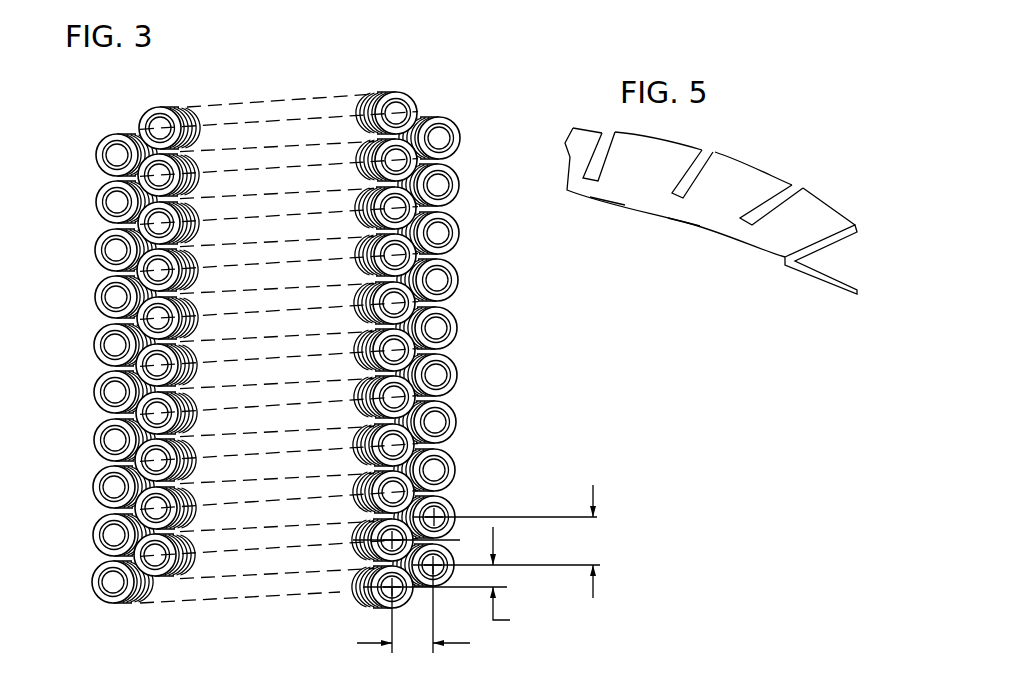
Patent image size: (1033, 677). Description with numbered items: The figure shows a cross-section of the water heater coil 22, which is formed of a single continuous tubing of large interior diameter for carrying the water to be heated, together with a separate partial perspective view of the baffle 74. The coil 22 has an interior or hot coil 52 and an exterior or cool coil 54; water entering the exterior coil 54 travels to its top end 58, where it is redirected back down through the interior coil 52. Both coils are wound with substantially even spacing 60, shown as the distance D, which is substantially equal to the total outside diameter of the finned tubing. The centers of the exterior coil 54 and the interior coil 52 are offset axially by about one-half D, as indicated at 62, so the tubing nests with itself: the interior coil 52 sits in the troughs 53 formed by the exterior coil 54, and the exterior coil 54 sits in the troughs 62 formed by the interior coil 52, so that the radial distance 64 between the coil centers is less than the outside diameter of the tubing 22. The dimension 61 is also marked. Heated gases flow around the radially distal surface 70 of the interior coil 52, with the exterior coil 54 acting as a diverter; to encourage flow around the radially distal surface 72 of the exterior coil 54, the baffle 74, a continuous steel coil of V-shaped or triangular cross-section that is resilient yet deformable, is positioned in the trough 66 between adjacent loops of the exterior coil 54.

In FIG. 3, the coil 22 is at (320, 332).
In FIG. 3, the top end 58 is at (210, 118).
In FIG. 3, the radial distance 64 is at (102, 322).
In FIG. 3, the troughs 62 is at (140, 395).
In FIG. 3, the radially distal surface 70 is at (405, 295).
In FIG. 3, the radially distal surface 72 is at (455, 337).
In FIG. 3, the troughs 53 is at (445, 534).
In FIG. 3, the interior coil 52 is at (385, 549).
In FIG. 3, the exterior coil 54 is at (454, 580).
In FIG. 3, the spacing 60 is at (605, 541).
In FIG. 3, the half pitch offset 61 is at (493, 577).
In FIG. 3, the trough 66 is at (425, 656).
In FIG. 5, the baffle 74 is at (737, 177).